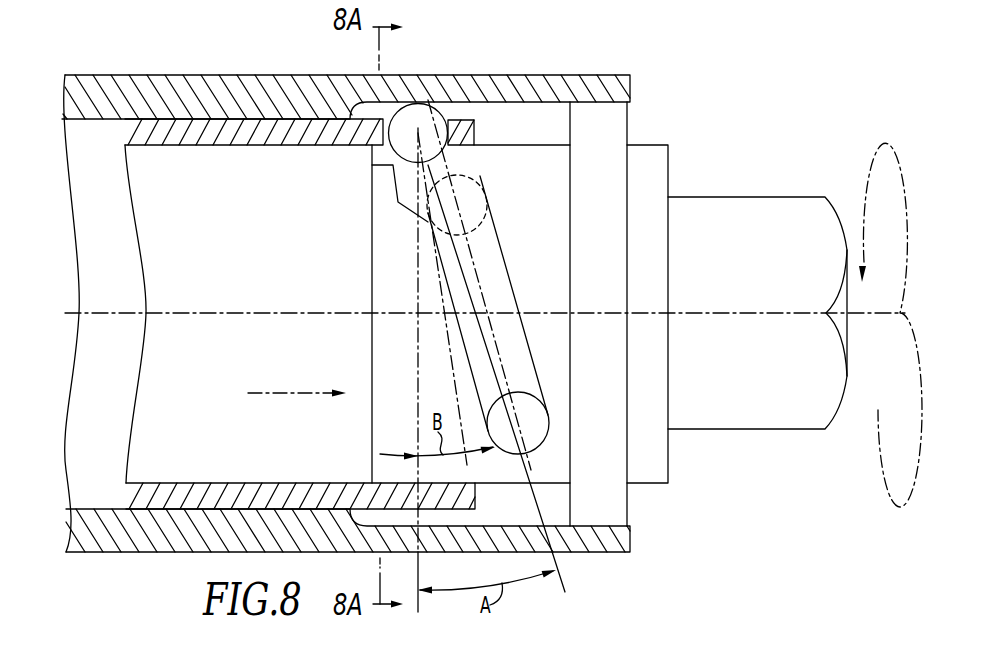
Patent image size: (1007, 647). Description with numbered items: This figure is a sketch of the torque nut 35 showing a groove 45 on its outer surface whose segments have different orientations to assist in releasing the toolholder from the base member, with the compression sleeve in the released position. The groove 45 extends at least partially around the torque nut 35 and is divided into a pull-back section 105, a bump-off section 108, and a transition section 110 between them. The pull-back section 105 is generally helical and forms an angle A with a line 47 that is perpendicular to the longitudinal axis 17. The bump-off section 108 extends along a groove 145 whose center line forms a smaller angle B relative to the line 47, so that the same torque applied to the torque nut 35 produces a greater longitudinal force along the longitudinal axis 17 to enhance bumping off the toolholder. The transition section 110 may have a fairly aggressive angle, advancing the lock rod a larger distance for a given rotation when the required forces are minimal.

The longitudinal axis 17 is at (222, 313).
The torque nut 35 is at (731, 210).
The groove 45 is at (490, 255).
The line perpendicular to the longitudinal axis 47 is at (415, 389).
The pull-back section 105 is at (507, 288).
The bump-off section 108 is at (449, 146).
The transition section 110 is at (462, 176).
The groove 145 is at (395, 178).